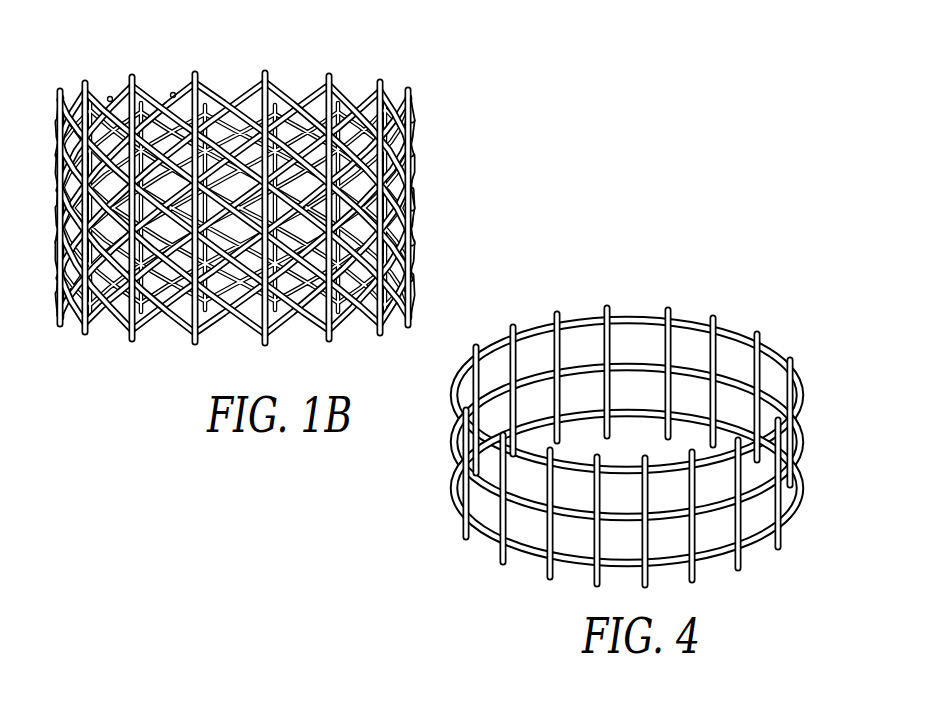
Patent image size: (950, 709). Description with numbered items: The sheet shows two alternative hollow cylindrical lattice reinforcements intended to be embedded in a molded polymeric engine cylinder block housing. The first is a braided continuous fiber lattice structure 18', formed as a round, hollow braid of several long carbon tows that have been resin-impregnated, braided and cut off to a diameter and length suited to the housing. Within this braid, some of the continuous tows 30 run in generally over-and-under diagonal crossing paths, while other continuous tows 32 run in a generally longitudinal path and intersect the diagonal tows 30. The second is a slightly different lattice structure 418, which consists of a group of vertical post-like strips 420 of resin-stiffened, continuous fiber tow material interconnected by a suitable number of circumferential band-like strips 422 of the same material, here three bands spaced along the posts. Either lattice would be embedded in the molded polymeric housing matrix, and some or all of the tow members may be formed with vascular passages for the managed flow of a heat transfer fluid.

In FIG. 1B, the braided continuous fiber lattice structure 18' is at (288, 182).
In FIG. 1B, the diagonal continuous tows 30 is at (243, 90).
In FIG. 1B, the longitudinal continuous tows 32 is at (173, 93).
In FIG. 4, the lattice structure 418 is at (686, 311).
In FIG. 4, the vertical post-like strips 420 is at (600, 318).
In FIG. 4, the circumferential band-like strips 422 is at (808, 492).